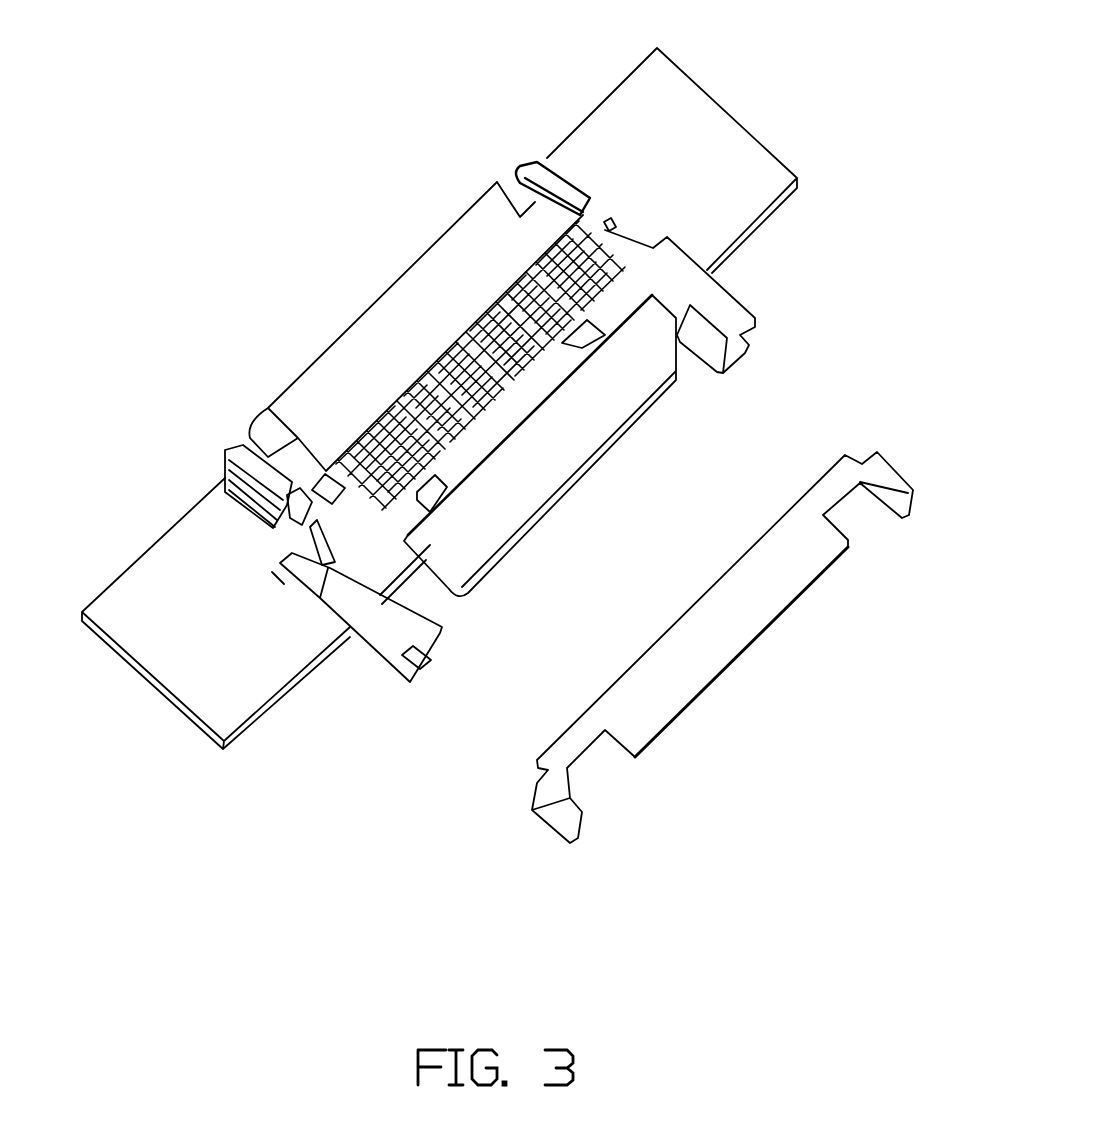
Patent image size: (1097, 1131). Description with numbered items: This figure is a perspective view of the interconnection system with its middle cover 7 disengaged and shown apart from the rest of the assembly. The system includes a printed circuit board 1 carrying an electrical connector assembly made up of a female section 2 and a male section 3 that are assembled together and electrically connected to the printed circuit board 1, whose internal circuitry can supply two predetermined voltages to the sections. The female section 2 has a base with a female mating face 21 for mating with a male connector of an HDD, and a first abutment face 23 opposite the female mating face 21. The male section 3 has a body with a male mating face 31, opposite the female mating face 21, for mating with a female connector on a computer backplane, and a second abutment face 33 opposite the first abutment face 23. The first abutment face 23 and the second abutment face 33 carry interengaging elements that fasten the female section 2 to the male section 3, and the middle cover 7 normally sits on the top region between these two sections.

The printed circuit board 1 is at (673, 108).
The female section 2 is at (717, 307).
The male section 3 is at (497, 226).
The middle cover 7 is at (723, 608).
The female mating face 21 is at (630, 437).
The first abutment face 23 is at (605, 230).
The male mating face 31 is at (403, 265).
The second abutment face 33 is at (590, 218).